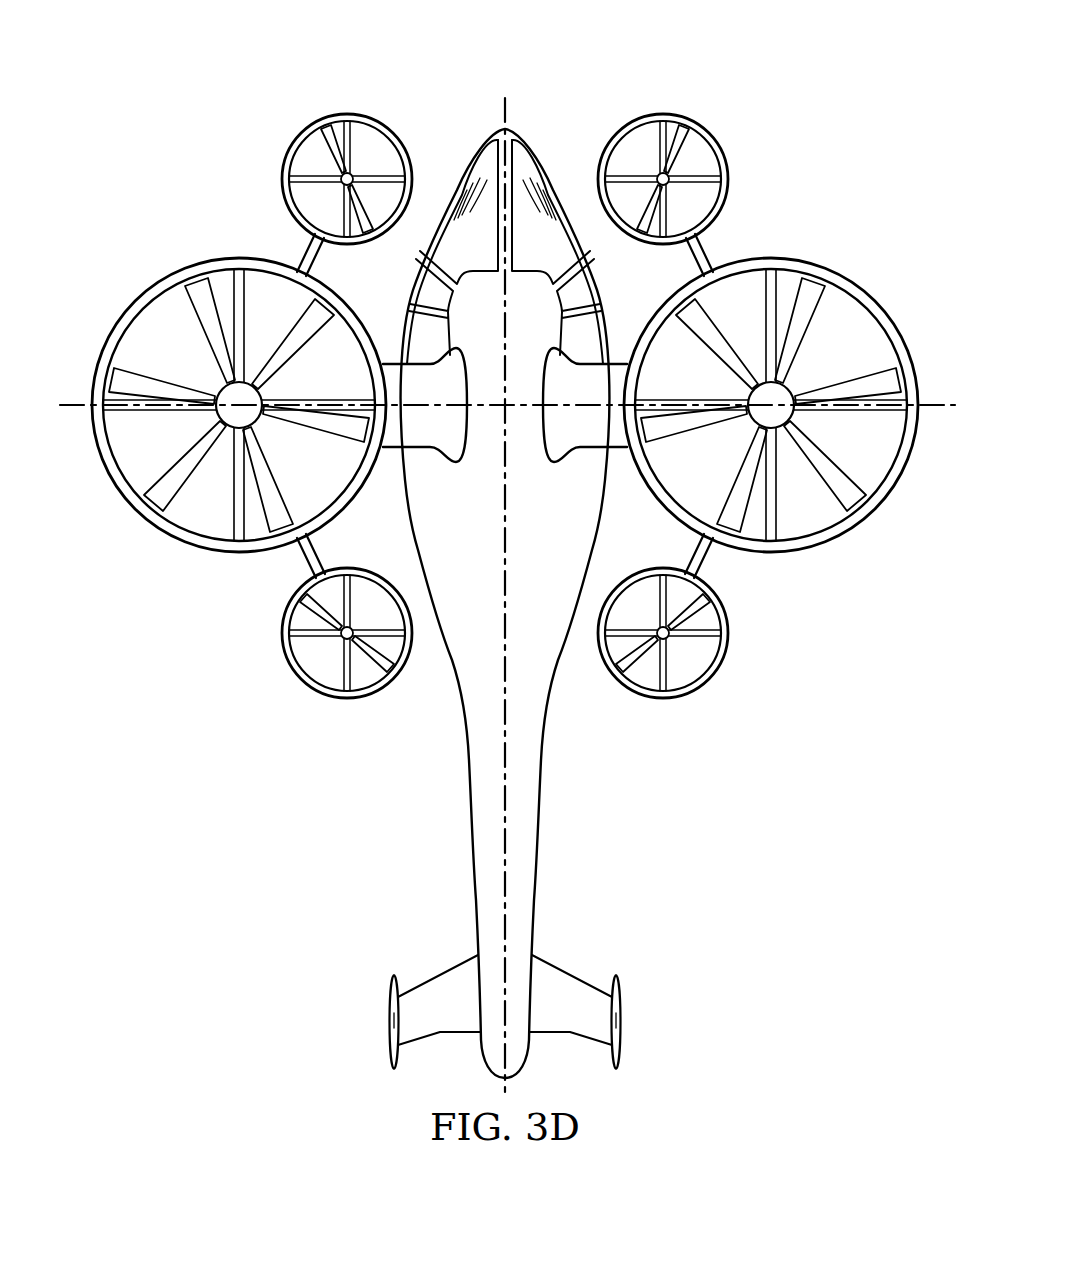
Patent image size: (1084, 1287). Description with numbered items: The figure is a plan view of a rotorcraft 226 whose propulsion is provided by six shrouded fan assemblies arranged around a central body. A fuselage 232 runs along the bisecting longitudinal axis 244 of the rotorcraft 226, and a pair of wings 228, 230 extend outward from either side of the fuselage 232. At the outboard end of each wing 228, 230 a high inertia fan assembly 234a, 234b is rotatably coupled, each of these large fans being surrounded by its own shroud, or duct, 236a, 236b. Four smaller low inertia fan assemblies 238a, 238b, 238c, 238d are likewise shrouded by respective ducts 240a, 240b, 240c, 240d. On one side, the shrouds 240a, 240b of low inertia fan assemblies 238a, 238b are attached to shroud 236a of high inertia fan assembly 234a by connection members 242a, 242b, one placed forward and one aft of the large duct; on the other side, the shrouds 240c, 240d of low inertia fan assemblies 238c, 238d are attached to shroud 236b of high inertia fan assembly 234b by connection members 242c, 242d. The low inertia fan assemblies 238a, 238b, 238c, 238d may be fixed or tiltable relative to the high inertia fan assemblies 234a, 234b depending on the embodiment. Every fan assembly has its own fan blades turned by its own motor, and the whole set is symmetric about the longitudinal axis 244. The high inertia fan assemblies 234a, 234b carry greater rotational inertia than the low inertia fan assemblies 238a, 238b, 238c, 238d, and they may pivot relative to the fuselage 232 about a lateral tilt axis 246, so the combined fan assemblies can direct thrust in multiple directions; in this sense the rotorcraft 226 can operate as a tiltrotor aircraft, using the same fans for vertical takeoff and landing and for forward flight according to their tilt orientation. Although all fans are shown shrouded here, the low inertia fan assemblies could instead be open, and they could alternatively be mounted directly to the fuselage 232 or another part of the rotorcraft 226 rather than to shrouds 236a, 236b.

The rotorcraft 226 is at (447, 98).
The wing 228 is at (425, 450).
The wing 230 is at (585, 450).
The fuselage 232 is at (532, 142).
The high inertia fan assembly 234a is at (132, 296).
The high inertia fan assembly 234b is at (876, 296).
The shroud 236a is at (178, 537).
The shroud 236b is at (842, 537).
The low inertia fan assembly 238a is at (284, 146).
The low inertia fan assembly 238b is at (284, 666).
The low inertia fan assembly 238c is at (726, 666).
The low inertia fan assembly 238d is at (727, 146).
The shroud 240a is at (312, 120).
The shroud 240b is at (323, 695).
The shroud 240c is at (690, 695).
The shroud 240d is at (700, 92).
The connection member 242a is at (308, 250).
The connection member 242b is at (303, 562).
The connection member 242c is at (707, 562).
The connection member 242d is at (706, 248).
The longitudinal axis 244 is at (508, 560).
The tilt axis 246 is at (953, 385).